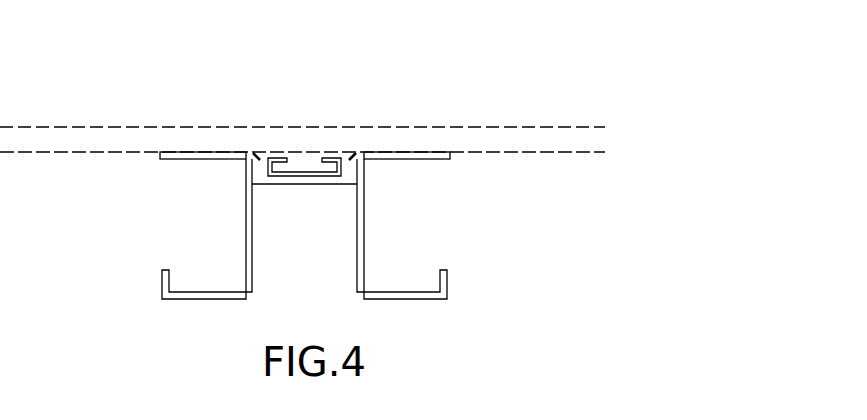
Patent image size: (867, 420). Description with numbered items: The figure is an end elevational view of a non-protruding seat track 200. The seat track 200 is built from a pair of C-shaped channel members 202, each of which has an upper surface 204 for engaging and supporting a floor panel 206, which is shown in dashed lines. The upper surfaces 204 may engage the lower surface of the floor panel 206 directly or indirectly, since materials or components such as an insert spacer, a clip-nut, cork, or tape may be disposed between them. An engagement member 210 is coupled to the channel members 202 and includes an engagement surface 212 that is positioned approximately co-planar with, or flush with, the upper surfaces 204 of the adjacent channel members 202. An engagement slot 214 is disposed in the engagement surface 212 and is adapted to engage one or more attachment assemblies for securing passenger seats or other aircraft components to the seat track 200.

The non-protruding seat track 200 is at (449, 62).
The C-shaped channel members 202 is at (162, 285).
The upper surface 204 is at (203, 152).
The floor panel 206 is at (593, 142).
The engagement member 210 is at (312, 184).
The engagement surface 212 is at (328, 153).
The engagement slot 214 is at (303, 152).